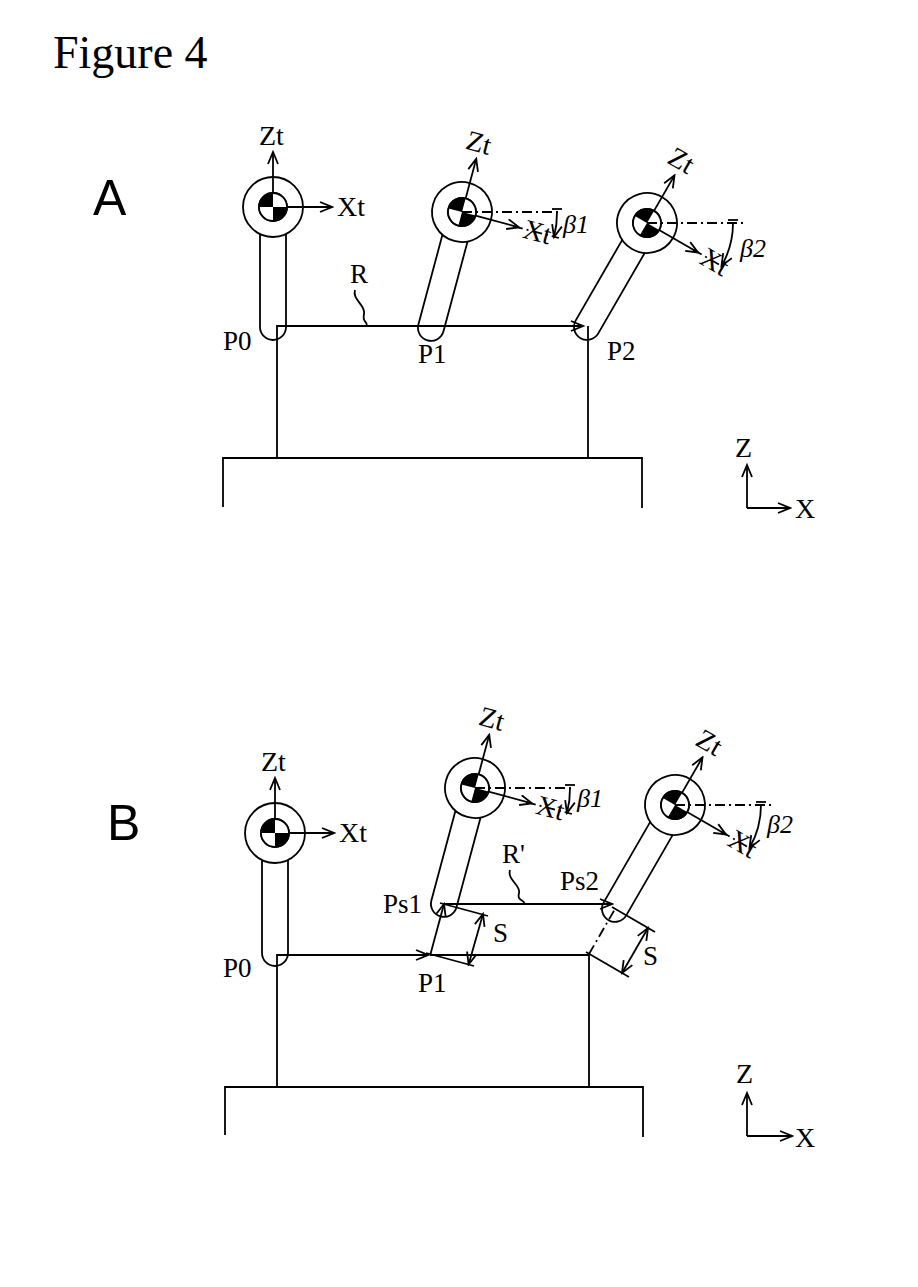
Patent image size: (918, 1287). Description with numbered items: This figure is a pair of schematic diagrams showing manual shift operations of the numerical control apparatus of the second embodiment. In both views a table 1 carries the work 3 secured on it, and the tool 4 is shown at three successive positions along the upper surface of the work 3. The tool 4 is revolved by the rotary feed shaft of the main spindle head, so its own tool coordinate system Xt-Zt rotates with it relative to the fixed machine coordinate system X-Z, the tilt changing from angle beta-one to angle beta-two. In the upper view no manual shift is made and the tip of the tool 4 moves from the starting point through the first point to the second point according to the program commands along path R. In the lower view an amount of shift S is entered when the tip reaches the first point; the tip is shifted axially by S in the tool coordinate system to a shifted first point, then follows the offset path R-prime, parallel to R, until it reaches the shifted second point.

In FIG. 4A, the table 1 is at (231, 485).
In FIG. 4B, the table 1 is at (231, 1115).
In FIG. 4A, the work 3 is at (280, 400).
In FIG. 4B, the work 3 is at (283, 1028).
In FIG. 4A, the tool 4 is at (264, 282).
In FIG. 4B, the tool 4 is at (266, 913).